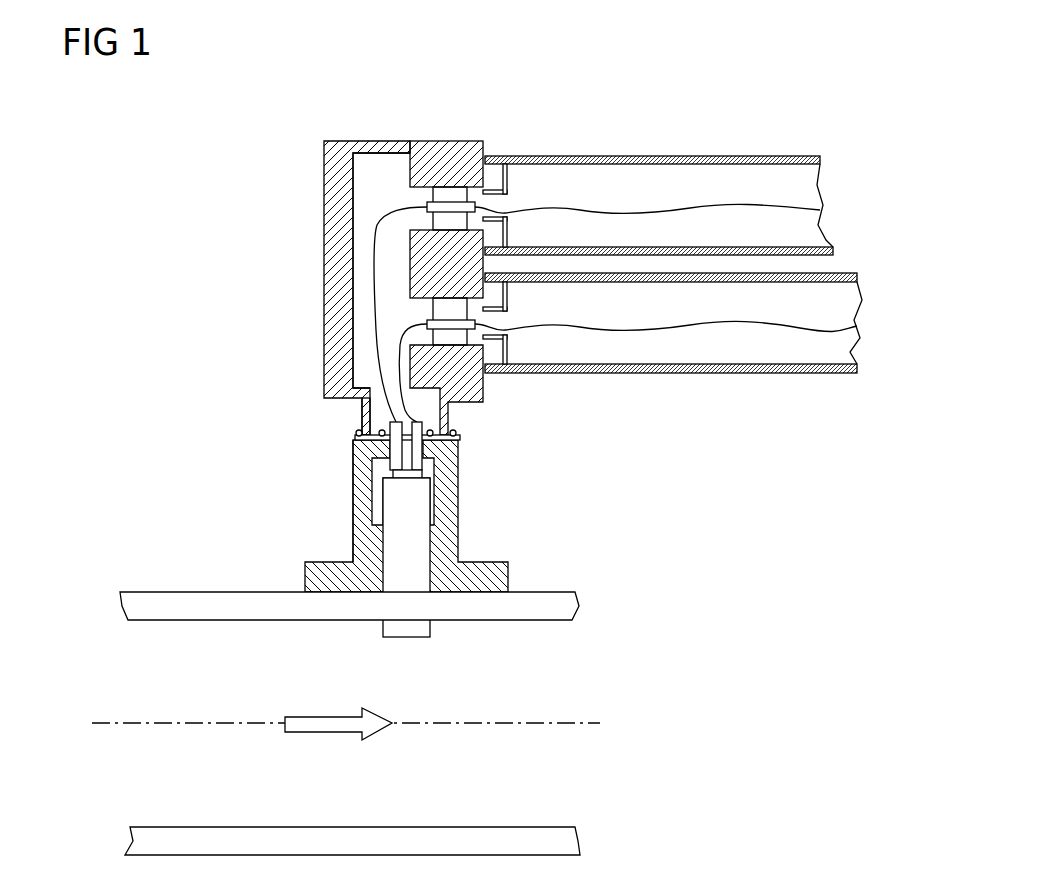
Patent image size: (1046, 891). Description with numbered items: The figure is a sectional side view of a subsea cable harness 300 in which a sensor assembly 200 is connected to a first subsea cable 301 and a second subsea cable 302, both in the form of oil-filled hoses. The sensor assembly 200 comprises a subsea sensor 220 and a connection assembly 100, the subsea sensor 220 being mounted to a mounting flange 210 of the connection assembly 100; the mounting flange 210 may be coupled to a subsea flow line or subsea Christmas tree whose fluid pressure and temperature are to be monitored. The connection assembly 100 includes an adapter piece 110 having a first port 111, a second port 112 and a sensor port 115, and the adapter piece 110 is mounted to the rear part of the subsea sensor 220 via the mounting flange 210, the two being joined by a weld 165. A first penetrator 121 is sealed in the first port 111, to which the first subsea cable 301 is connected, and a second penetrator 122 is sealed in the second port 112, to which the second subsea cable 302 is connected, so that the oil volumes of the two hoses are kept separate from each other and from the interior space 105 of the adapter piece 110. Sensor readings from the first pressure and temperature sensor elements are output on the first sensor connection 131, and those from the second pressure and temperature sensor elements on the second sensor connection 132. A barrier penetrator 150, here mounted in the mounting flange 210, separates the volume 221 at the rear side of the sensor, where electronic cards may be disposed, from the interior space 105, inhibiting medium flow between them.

The connection assembly 100 is at (160, 316).
The interior space 105 is at (358, 313).
The adapter piece 110 is at (325, 252).
The first port 111 is at (492, 207).
The second port 112 is at (495, 325).
The sensor port 115 is at (362, 420).
The first penetrator 121 is at (448, 192).
The second penetrator 122 is at (460, 342).
The first sensor connection 131 is at (375, 212).
The second sensor connection 132 is at (362, 352).
The barrier penetrator 150 is at (357, 437).
The weld 165 is at (462, 437).
The sensor assembly 200 is at (148, 470).
The mounting flange 210 is at (328, 562).
The subsea sensor 220 is at (408, 623).
The volume 221 is at (357, 463).
The subsea cable harness 300 is at (663, 510).
The first subsea cable 301 is at (668, 156).
The second subsea cable 302 is at (697, 373).